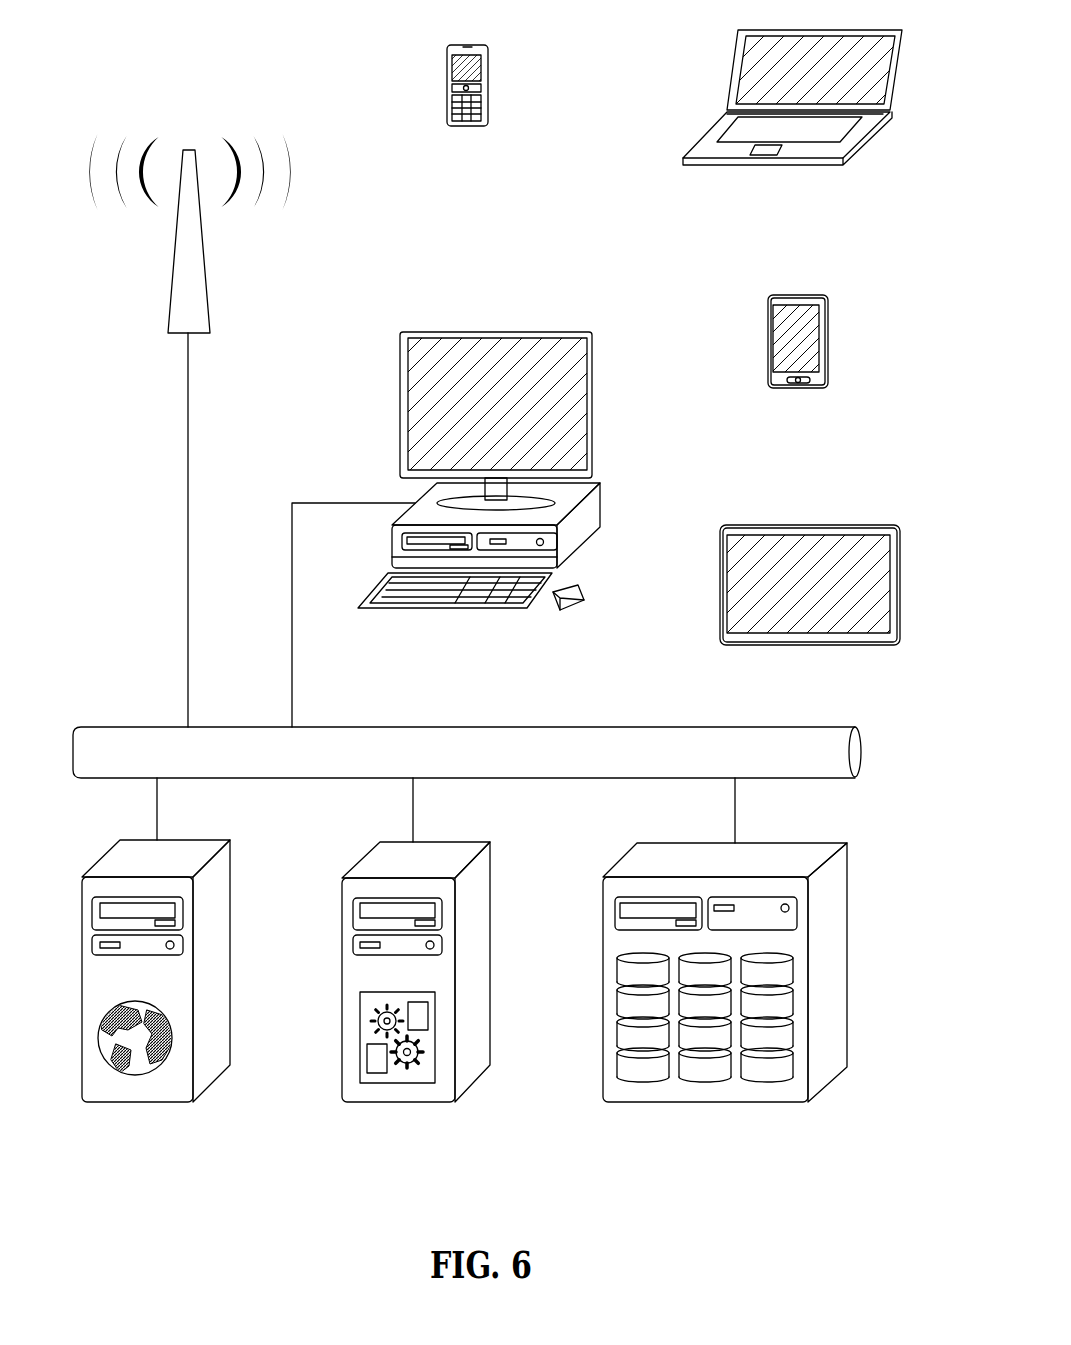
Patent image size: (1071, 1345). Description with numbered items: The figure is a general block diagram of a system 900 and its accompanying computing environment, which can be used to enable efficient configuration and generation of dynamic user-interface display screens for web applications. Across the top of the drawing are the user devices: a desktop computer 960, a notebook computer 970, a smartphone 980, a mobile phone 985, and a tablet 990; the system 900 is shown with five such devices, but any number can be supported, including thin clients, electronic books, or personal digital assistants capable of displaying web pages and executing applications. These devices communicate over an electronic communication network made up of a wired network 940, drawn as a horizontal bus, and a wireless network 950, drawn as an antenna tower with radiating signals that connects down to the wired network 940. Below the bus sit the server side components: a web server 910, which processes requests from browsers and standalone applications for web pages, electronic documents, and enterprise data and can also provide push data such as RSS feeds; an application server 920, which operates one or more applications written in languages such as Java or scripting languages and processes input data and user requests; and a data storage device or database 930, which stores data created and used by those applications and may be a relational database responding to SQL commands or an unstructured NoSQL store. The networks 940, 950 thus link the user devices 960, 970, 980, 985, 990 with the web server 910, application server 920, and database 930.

The system 900 is at (147, 62).
The web server 910 is at (143, 1094).
The application server 920 is at (400, 1094).
The data storage device or database 930 is at (693, 1080).
The wired network 940 is at (625, 762).
The wireless network 950 is at (213, 240).
The desktop computer 960 is at (478, 620).
The notebook computer 970 is at (798, 203).
The smartphone 980 is at (800, 402).
The mobile phone 985 is at (473, 145).
The tablet 990 is at (805, 645).